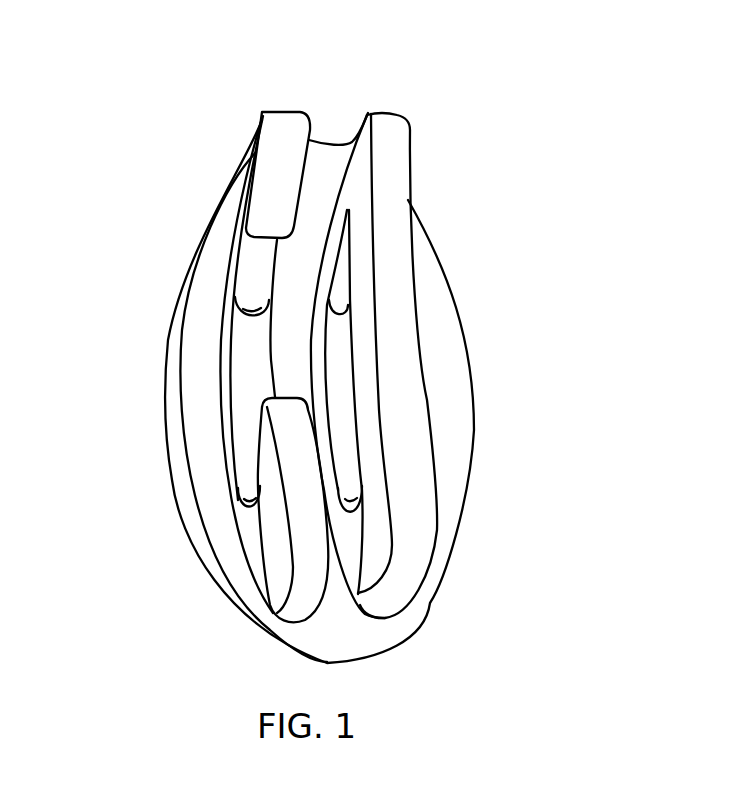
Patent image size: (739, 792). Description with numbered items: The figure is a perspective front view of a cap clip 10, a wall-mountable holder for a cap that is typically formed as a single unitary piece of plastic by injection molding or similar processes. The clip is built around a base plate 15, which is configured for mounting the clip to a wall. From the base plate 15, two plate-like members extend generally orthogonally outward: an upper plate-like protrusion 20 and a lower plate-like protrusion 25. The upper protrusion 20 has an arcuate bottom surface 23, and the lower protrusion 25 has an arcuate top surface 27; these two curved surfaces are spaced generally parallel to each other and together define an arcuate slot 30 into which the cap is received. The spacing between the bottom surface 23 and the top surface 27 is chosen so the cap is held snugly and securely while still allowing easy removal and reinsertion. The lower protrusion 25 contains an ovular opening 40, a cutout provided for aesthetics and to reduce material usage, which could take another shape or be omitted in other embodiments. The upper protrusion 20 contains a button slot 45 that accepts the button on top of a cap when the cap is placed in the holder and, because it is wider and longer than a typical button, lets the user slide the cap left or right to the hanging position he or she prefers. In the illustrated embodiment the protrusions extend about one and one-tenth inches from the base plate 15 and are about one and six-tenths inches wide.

The cap clip 10 is at (238, 34).
The base plate 15 is at (176, 263).
The upper plate-like protrusion 20 is at (232, 489).
The arcuate bottom surface 23 is at (310, 158).
The lower plate-like protrusion 25 is at (415, 292).
The arcuate top surface 27 is at (365, 190).
The arcuate slot 30 is at (340, 610).
The ovular opening 40 is at (344, 412).
The button slot 45 is at (248, 258).